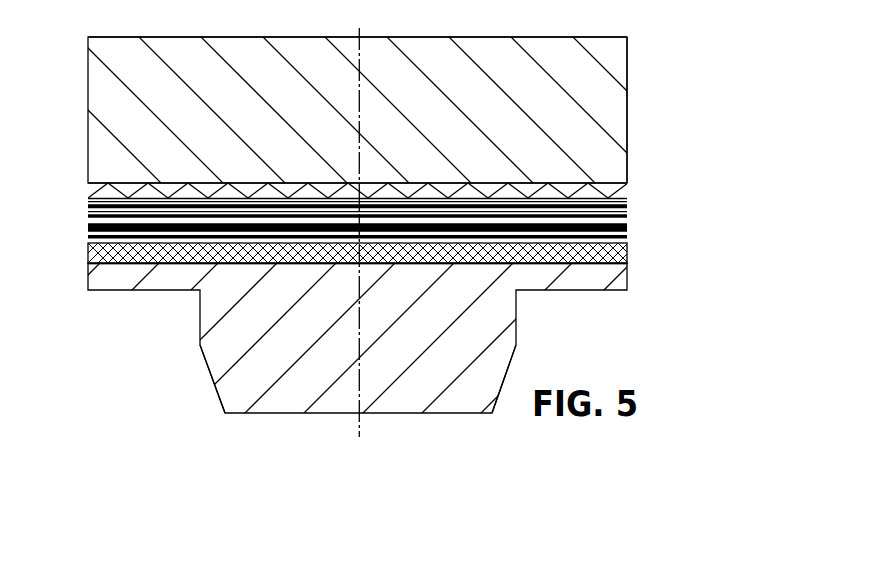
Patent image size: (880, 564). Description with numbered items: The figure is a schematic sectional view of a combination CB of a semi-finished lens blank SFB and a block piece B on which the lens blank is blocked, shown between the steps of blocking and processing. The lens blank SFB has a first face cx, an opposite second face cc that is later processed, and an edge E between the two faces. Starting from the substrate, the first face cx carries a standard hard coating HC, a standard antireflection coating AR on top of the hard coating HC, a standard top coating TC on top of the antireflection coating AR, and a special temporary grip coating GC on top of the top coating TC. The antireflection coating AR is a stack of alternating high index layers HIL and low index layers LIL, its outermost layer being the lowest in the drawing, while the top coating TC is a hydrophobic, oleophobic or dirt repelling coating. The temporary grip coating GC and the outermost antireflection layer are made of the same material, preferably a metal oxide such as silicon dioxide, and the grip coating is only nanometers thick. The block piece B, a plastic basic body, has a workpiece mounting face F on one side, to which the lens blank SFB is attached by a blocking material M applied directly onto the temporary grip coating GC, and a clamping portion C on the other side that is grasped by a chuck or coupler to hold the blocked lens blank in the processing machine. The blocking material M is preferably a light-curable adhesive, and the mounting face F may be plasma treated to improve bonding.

The combination CB is at (760, 407).
The semi-finished lens blank SFB is at (620, 110).
The second face CC is at (107, 37).
The edge E is at (628, 148).
The hard coating HC is at (112, 190).
The first face cx is at (600, 191).
The antireflection coating AR is at (394, 205).
The high index layer HIL is at (628, 216).
The low index layer LIL is at (88, 215).
The top coating TC is at (87, 228).
The temporary grip coating GC is at (628, 237).
The blocking material M is at (96, 252).
The workpiece mounting face F is at (568, 262).
The block piece B is at (184, 291).
The clamping portion C is at (213, 383).